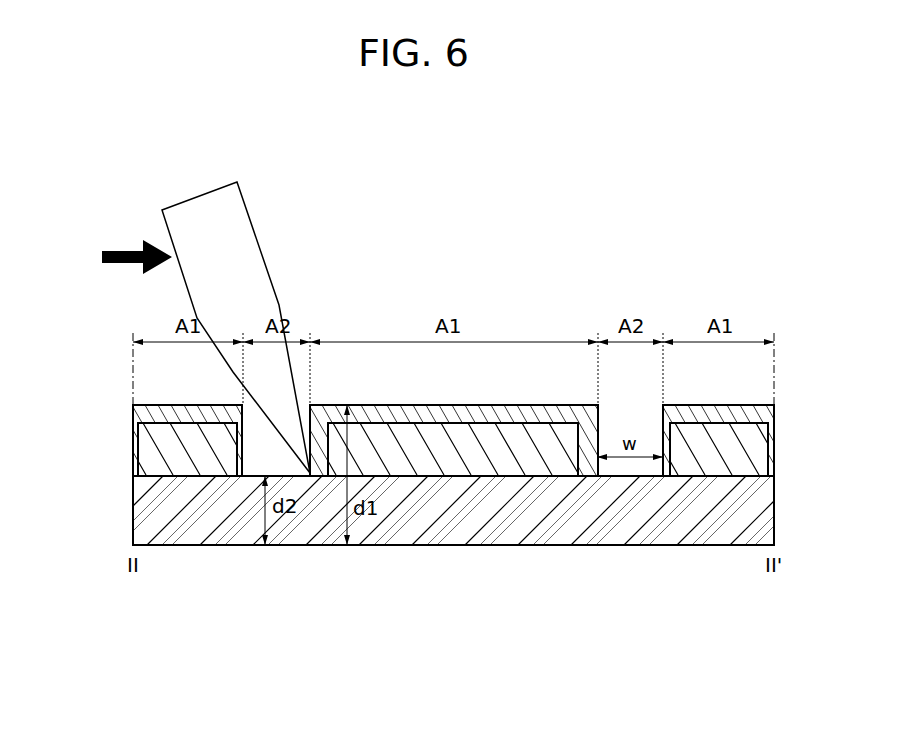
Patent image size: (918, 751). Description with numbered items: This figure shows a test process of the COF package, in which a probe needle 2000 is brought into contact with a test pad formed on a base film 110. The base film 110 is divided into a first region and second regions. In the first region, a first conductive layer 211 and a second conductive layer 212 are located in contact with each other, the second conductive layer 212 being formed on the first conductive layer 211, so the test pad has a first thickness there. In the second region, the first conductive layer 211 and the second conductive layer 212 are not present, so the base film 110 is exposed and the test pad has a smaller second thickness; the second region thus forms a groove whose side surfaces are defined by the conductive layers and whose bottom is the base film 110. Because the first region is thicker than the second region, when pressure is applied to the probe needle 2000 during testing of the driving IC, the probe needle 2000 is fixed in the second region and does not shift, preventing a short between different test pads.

The probe needle 2000 is at (202, 195).
The first conductive layer 211 is at (489, 455).
The second conductive layer 212 is at (554, 415).
The base film 110 is at (648, 512).